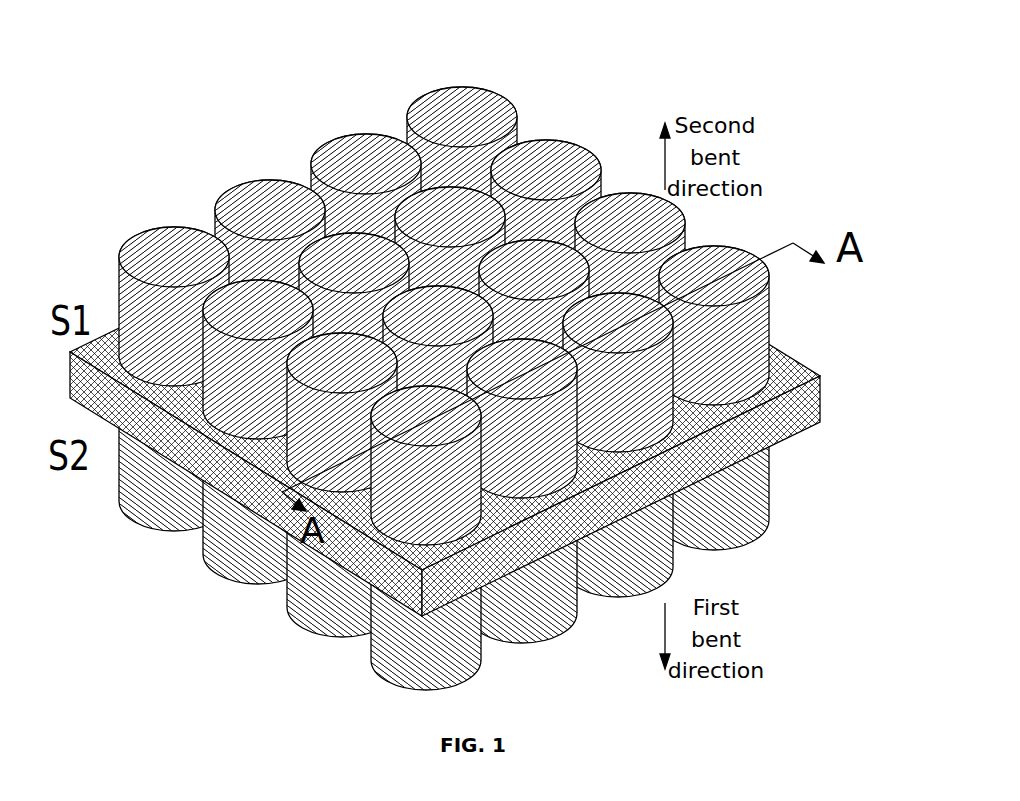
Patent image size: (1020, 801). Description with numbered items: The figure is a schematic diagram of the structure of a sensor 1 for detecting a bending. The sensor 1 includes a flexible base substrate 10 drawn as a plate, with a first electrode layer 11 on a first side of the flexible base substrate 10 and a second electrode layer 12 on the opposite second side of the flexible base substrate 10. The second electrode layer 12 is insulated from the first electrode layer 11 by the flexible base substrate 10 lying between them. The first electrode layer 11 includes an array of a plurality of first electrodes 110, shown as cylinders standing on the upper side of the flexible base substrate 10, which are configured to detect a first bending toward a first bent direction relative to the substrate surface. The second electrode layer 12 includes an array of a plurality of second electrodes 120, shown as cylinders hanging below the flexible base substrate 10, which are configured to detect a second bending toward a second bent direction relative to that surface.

The sensor 1 is at (485, 345).
The flexible base substrate 10 is at (828, 408).
The first electrode layer 11 is at (822, 315).
The second electrode layer 12 is at (822, 480).
The first electrode 110 is at (426, 465).
The second electrode 120 is at (426, 625).